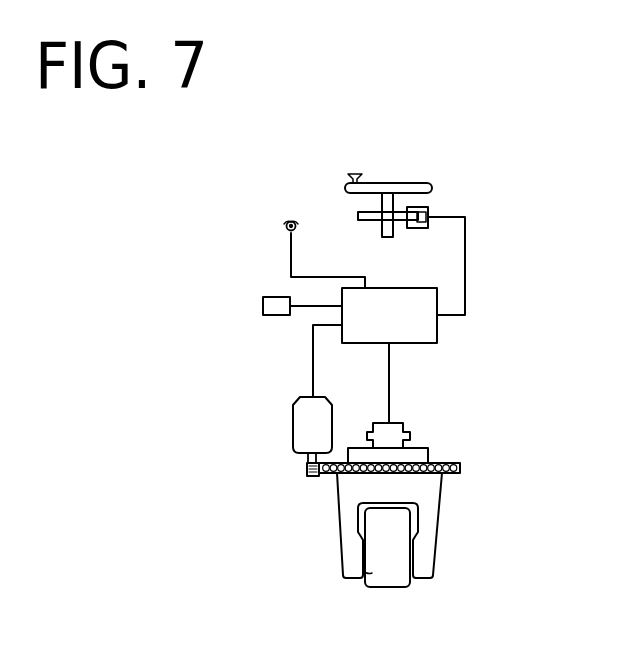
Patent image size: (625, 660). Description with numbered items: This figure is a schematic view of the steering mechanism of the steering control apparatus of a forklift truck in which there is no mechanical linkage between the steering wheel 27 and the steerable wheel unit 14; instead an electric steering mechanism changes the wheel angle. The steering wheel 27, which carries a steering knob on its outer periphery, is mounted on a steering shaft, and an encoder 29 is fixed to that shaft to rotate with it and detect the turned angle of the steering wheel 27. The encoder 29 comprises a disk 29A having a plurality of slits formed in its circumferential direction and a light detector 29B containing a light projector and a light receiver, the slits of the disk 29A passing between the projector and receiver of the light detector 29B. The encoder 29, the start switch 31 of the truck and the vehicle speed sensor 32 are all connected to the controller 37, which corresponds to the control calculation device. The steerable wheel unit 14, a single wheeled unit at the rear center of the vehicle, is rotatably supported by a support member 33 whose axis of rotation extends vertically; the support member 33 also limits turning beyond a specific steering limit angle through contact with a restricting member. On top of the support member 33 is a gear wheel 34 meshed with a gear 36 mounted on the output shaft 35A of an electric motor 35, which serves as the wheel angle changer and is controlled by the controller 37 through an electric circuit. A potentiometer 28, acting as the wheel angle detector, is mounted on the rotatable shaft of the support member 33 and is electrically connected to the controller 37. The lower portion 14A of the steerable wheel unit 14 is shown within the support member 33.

The steering wheel 27 is at (410, 184).
The encoder 29 is at (451, 200).
The disk 29A is at (403, 204).
The light detector 29B is at (430, 206).
The start switch 31 is at (283, 227).
The vehicle speed sensor 32 is at (263, 306).
The controller 37 is at (417, 285).
The electric motor 35 is at (302, 427).
The output shaft 35A is at (307, 458).
The gear 36 is at (307, 474).
The gear wheel 34 is at (462, 468).
The support member 33 is at (436, 496).
The potentiometer 28 is at (395, 424).
The steerable wheel unit 14 is at (398, 580).
The workpiece lower portion 14A is at (372, 573).